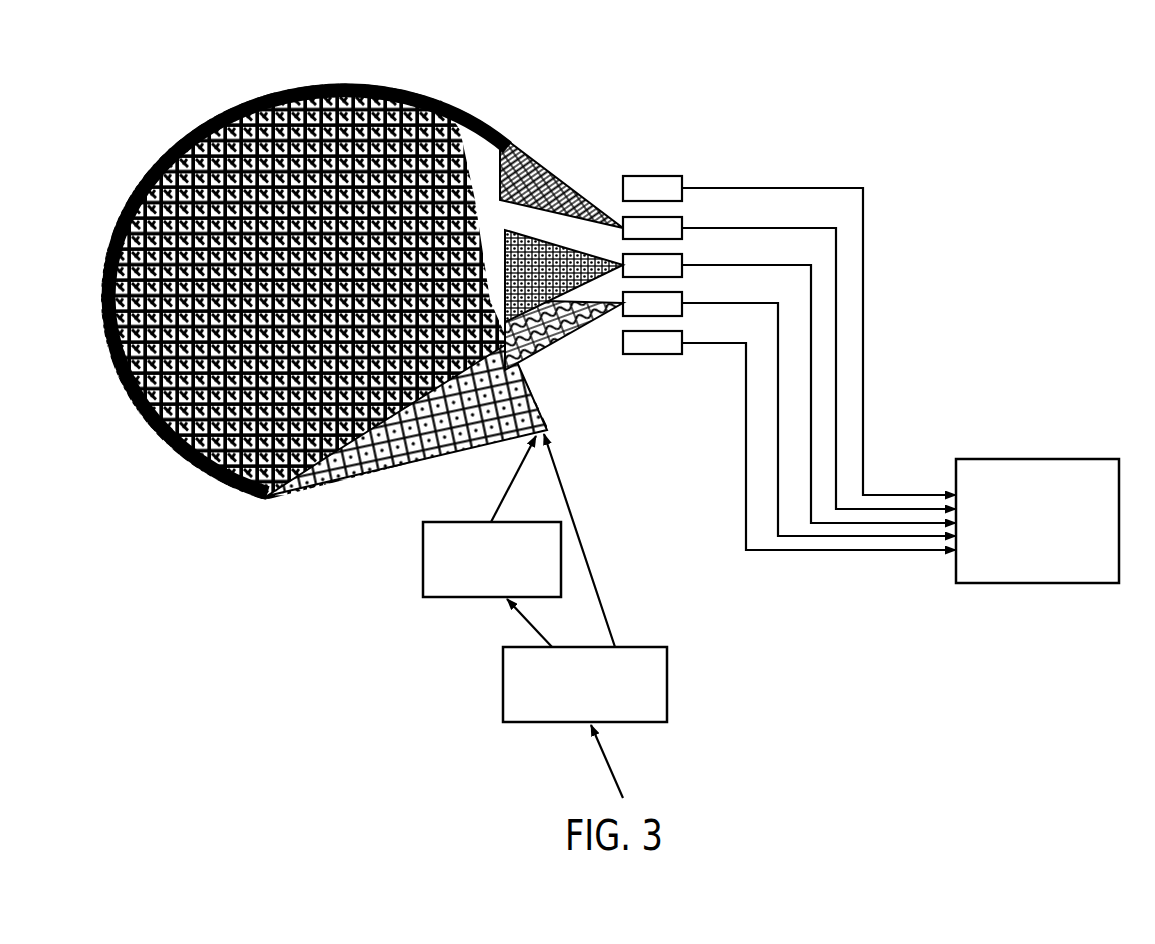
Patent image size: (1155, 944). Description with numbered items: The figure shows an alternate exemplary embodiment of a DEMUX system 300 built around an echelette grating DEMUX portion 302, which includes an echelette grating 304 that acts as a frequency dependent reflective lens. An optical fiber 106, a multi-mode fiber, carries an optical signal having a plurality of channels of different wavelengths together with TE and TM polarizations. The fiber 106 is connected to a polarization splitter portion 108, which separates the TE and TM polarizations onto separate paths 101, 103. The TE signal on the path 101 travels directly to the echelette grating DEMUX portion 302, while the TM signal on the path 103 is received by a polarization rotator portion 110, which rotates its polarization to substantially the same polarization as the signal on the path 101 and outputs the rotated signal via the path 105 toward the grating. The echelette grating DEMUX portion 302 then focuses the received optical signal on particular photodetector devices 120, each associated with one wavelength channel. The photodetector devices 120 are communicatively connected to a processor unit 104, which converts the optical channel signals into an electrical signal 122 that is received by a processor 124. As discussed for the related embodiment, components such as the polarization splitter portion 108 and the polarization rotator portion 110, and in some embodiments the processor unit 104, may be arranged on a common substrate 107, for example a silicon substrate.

The DEMUX system 300 is at (850, 122).
The echelette grating DEMUX portion 302 is at (525, 80).
The echelette grating 304 is at (229, 108).
The processor unit 104 is at (1038, 345).
The common substrate 107 is at (342, 550).
The photodetector devices 120 is at (658, 176).
The electrical signal 122 is at (906, 494).
The processor 124 is at (1040, 459).
The polarization rotator portion 110 is at (423, 558).
The polarization splitter portion 108 is at (668, 688).
The path 105 is at (503, 490).
The path 101 is at (584, 545).
The path 103 is at (532, 623).
The optical fiber 106 is at (612, 766).